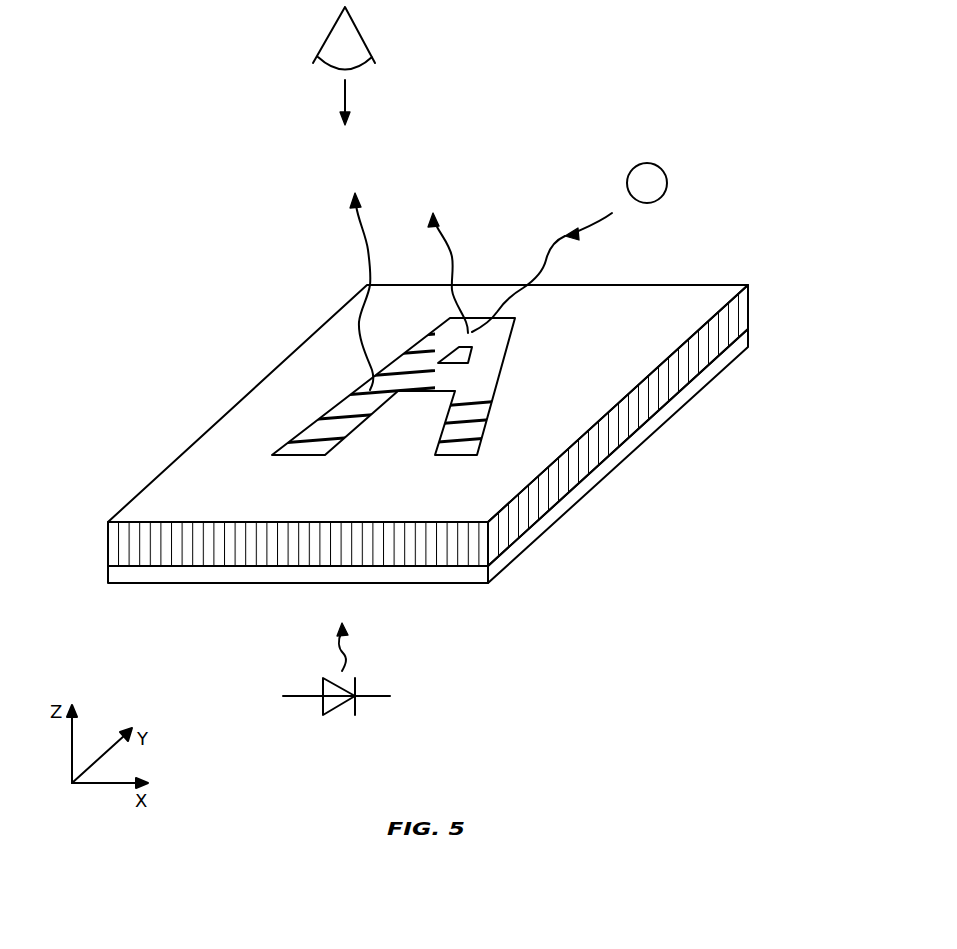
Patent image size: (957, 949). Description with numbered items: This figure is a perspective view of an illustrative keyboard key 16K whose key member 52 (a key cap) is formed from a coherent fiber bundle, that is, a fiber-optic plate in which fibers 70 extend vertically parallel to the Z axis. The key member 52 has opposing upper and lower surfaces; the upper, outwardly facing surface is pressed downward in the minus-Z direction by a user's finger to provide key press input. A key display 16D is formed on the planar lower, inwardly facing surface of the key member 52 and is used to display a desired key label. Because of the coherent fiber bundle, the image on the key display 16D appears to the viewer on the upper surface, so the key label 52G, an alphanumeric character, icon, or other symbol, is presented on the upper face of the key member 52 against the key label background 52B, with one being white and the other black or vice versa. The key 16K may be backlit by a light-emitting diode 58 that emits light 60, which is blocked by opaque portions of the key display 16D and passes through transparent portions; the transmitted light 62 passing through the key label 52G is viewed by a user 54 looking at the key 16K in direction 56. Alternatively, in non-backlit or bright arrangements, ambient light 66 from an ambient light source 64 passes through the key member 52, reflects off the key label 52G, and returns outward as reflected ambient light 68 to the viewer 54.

The keyboard key 16K is at (795, 299).
The key display 16D is at (520, 540).
The key member 52 is at (100, 523).
The key label background 52B is at (663, 303).
The key label 52G is at (487, 376).
The fibers 70 is at (177, 550).
The user 54 is at (360, 30).
The direction 56 is at (347, 97).
The light-emitting diode 58 is at (338, 707).
The light 60 is at (350, 653).
The transmitted light 62 is at (360, 238).
The ambient light source 64 is at (668, 180).
The ambient light 66 is at (550, 243).
The reflected ambient light 68 is at (447, 242).